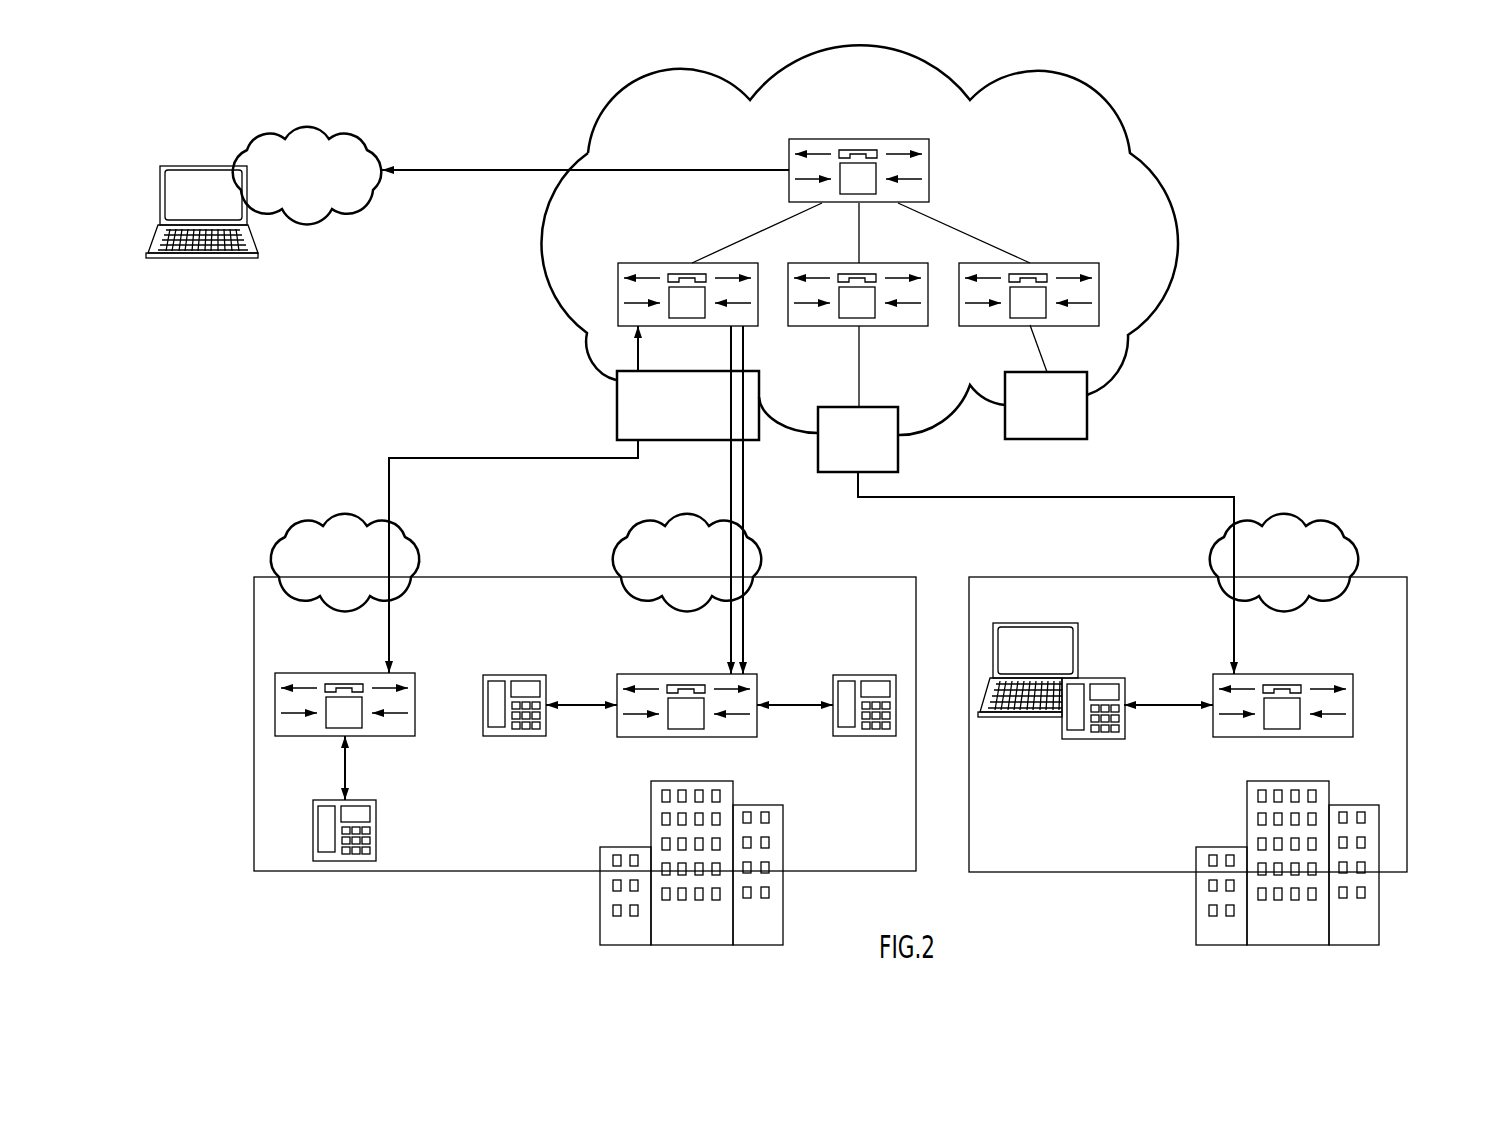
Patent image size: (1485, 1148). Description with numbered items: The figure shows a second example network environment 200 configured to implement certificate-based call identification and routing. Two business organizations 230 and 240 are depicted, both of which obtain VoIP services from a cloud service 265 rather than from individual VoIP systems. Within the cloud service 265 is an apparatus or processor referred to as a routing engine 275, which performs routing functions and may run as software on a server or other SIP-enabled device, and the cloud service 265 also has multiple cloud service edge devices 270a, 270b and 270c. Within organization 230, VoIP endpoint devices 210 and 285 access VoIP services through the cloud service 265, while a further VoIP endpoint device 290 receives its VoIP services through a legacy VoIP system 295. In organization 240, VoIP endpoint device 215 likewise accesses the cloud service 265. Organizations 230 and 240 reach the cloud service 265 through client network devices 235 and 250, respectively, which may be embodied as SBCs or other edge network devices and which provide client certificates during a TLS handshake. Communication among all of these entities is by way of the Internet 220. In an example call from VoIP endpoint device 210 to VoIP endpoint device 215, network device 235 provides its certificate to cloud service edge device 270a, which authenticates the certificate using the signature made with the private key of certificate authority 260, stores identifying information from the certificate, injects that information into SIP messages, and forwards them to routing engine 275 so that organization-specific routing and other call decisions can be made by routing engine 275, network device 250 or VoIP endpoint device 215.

The network environment 200 is at (1295, 161).
The VoIP endpoint device 210 is at (865, 675).
The VoIP endpoint device 215 is at (1100, 678).
The Internet 220 is at (372, 150).
The business organization 230 is at (254, 620).
The network device 235 is at (625, 674).
The business organization 240 is at (1407, 630).
The network device 250 is at (1340, 674).
The certificate authority 260 is at (160, 196).
The cloud service 265 is at (1155, 172).
The cloud service edge device 270a is at (617, 415).
The cloud service edge device 270b is at (818, 455).
The cloud service edge device 270c is at (1087, 418).
The routing engine 275 is at (855, 140).
The VoIP endpoint device 285 is at (516, 675).
The VoIP endpoint device 290 is at (328, 800).
The legacy VoIP system 295 is at (292, 673).